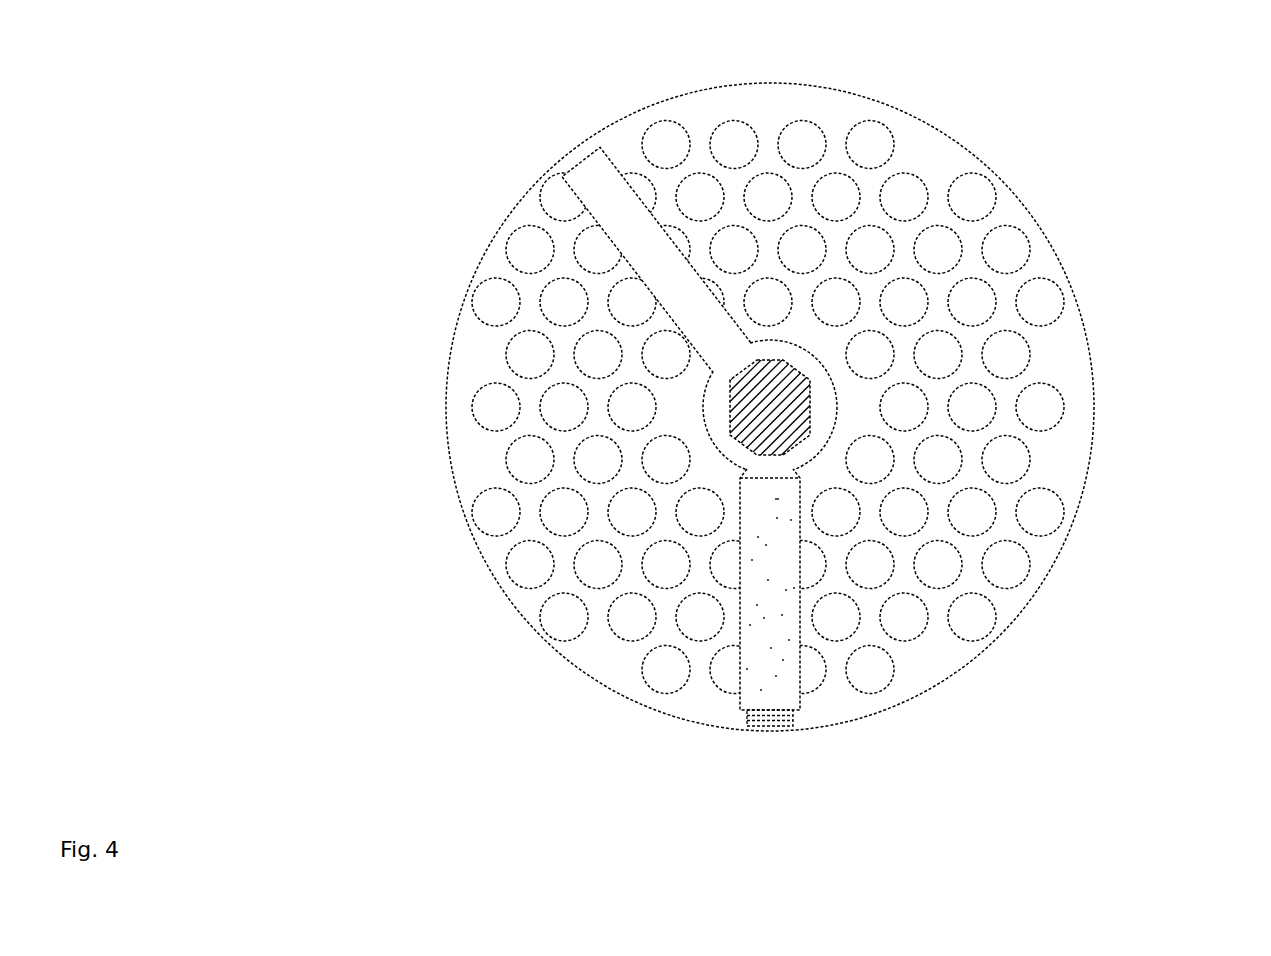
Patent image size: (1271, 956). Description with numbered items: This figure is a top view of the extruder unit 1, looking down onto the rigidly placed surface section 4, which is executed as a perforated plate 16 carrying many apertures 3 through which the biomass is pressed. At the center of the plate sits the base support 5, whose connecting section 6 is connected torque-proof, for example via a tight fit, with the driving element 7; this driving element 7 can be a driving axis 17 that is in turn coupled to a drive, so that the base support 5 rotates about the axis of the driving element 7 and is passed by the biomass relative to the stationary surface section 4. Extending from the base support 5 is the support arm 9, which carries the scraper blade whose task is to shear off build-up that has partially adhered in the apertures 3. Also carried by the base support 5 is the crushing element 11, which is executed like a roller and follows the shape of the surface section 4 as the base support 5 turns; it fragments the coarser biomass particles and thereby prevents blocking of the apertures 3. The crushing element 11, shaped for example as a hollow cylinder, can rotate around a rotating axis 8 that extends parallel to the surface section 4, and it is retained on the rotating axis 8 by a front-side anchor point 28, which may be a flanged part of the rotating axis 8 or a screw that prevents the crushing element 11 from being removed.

The extruder unit 1 is at (306, 184).
The apertures 3 is at (842, 407).
The surface section 4 is at (843, 407).
The base support 5 is at (939, 199).
The connecting section 6 is at (605, 610).
The driving element 7 is at (782, 420).
The rotating axis 8 is at (796, 769).
The support arm 9 is at (634, 195).
The crushing element 11 is at (700, 640).
The perforated plate 16 is at (387, 323).
The driving axis 17 is at (556, 407).
The anchor point 28 is at (743, 768).